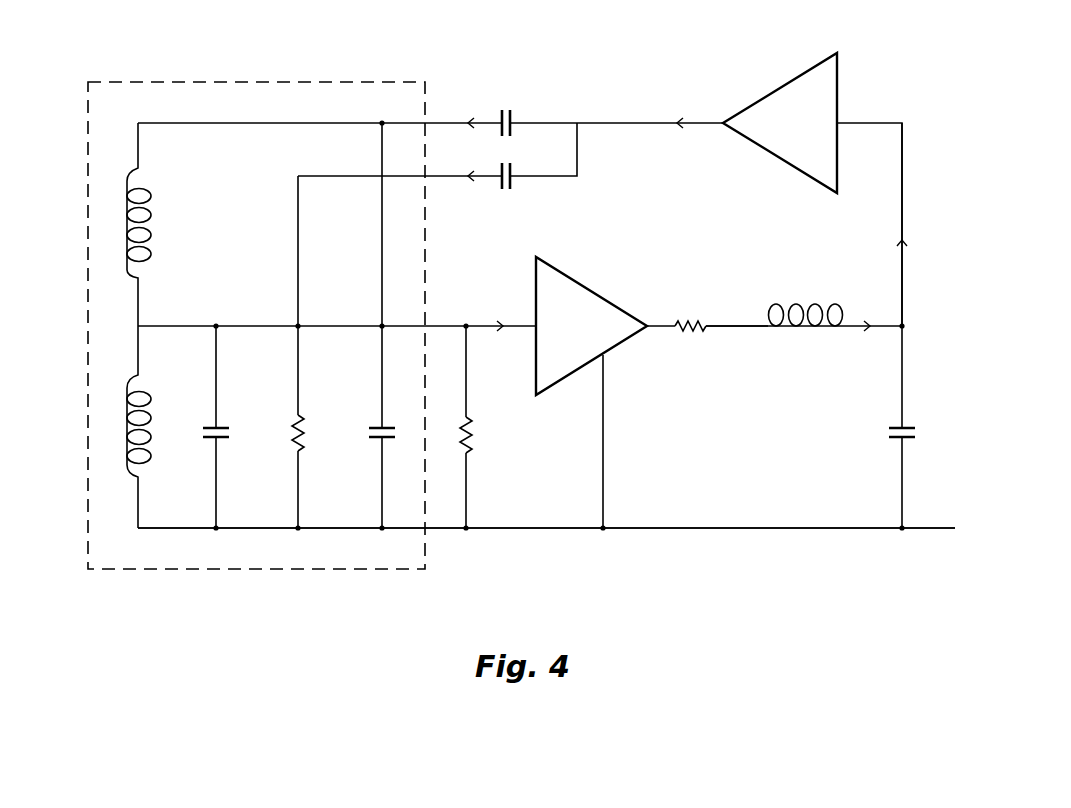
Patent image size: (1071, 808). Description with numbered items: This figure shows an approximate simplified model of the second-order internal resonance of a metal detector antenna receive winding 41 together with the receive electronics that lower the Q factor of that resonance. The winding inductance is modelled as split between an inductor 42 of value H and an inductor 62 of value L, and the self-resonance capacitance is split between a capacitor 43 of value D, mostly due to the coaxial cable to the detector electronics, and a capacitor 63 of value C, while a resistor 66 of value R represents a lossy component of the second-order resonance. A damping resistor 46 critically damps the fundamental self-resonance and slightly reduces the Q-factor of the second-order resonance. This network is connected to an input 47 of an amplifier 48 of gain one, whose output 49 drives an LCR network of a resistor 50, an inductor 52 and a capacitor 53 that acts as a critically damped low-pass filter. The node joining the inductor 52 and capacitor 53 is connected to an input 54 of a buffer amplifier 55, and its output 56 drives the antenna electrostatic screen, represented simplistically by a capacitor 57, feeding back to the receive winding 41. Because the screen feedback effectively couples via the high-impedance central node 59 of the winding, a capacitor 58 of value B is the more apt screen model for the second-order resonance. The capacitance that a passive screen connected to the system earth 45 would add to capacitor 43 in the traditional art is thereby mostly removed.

The receive winding 41 is at (282, 572).
The inductor 42 is at (150, 402).
The capacitor 43 is at (373, 428).
The system earth 45 is at (530, 530).
The damping resistor 46 is at (474, 432).
The input 47 is at (483, 325).
The amplifier 48 is at (597, 295).
The output 49 is at (658, 322).
The resistor 50 is at (700, 322).
The inductor 52 is at (796, 304).
The capacitor 53 is at (892, 426).
The input 54 is at (905, 178).
The buffer amplifier 55 is at (773, 91).
The output 56 is at (611, 123).
The capacitor 57 is at (512, 112).
The capacitor 58 is at (512, 183).
The node 59 is at (250, 326).
The inductor 62 is at (151, 212).
The capacitor 63 is at (230, 438).
The resistor 66 is at (305, 446).